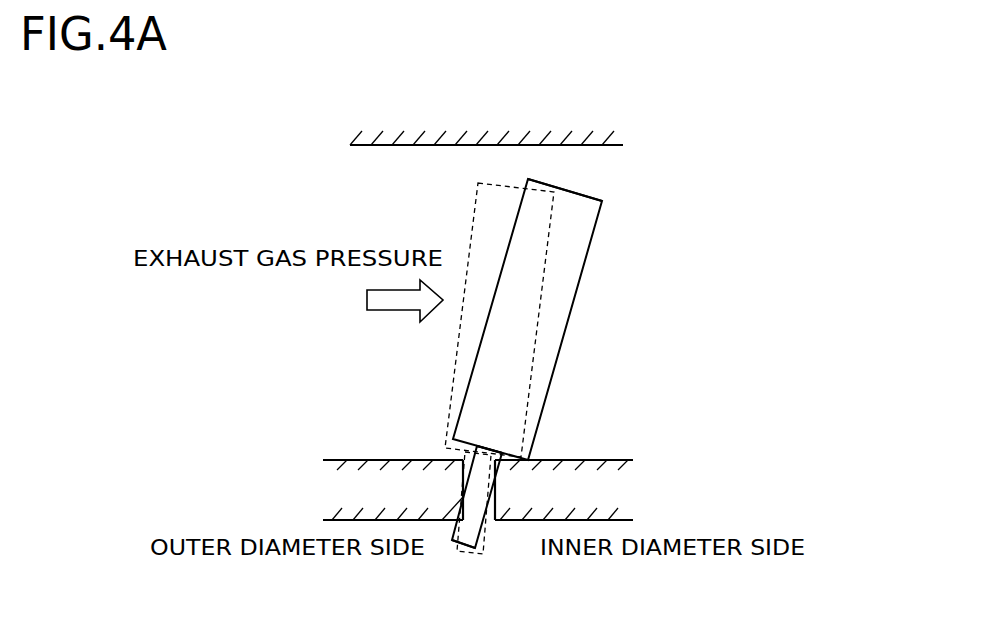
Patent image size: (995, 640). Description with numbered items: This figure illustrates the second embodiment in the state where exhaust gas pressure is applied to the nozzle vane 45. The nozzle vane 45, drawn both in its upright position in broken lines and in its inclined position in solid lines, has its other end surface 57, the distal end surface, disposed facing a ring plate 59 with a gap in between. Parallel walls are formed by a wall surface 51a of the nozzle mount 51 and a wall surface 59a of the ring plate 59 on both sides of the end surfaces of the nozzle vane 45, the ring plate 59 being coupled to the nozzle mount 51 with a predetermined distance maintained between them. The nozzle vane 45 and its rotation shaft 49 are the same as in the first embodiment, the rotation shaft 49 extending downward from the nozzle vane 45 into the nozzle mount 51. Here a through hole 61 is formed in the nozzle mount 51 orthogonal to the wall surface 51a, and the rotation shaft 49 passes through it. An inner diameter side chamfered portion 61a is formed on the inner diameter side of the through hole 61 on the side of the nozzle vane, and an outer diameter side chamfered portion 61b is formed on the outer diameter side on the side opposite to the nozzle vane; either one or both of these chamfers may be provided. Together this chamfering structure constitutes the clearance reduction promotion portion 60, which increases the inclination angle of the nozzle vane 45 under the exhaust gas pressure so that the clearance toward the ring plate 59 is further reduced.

The nozzle vane 45 is at (574, 300).
The rotation shaft 49 is at (472, 490).
The nozzle mount 51 is at (622, 493).
The wall surface 51a is at (623, 459).
The other end surface 57 is at (578, 193).
The ring plate 59 is at (597, 138).
The wall surface 59a is at (590, 146).
The clearance reduction promotion portion 60 is at (490, 568).
The through hole 61 is at (490, 520).
The inner diameter side chamfered portion 61a is at (500, 478).
The outer diameter side chamfered portion 61b is at (462, 508).